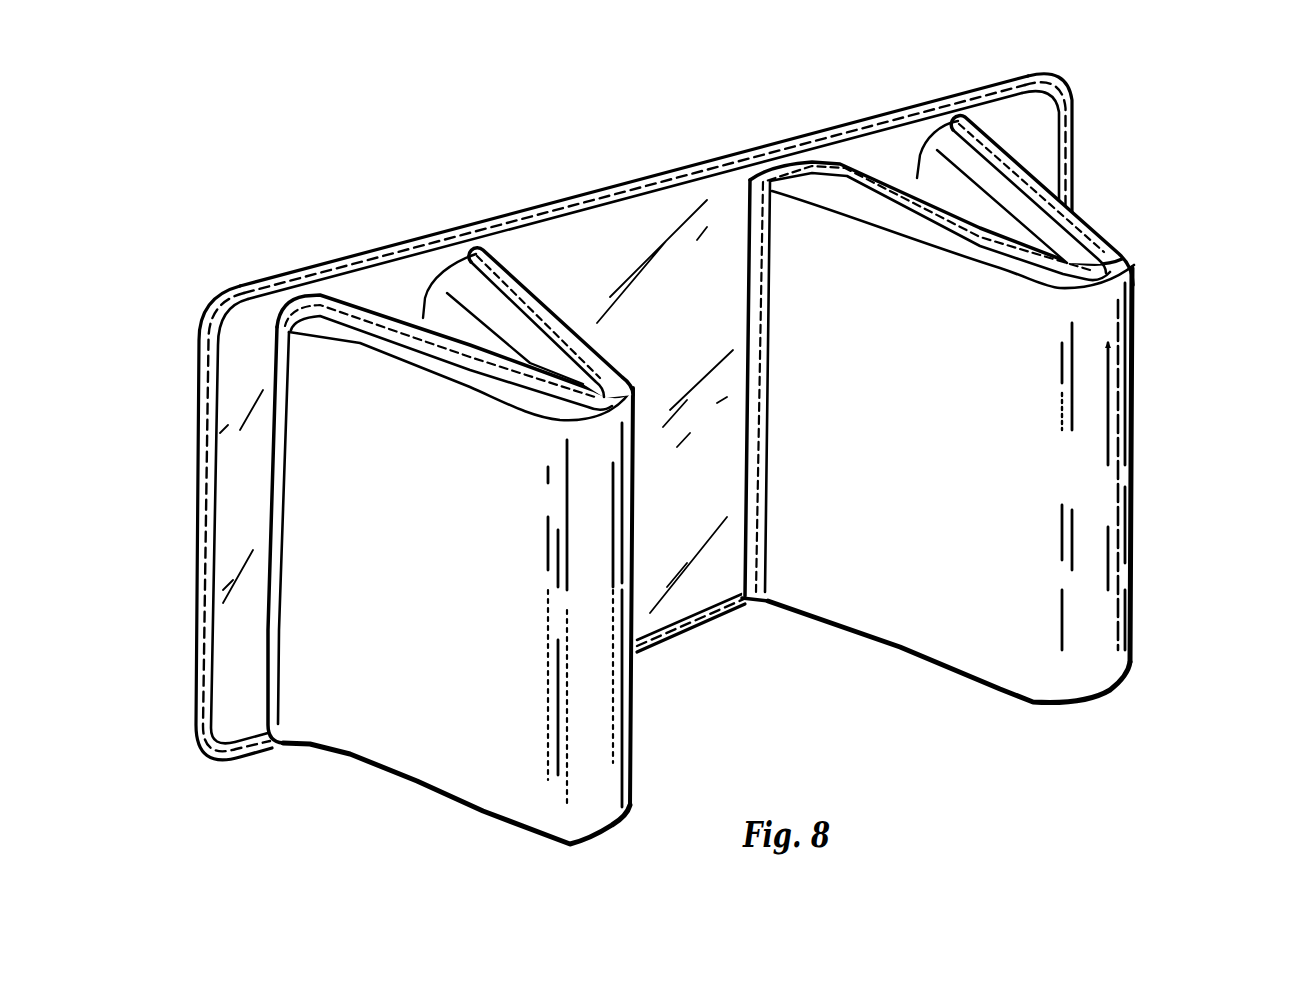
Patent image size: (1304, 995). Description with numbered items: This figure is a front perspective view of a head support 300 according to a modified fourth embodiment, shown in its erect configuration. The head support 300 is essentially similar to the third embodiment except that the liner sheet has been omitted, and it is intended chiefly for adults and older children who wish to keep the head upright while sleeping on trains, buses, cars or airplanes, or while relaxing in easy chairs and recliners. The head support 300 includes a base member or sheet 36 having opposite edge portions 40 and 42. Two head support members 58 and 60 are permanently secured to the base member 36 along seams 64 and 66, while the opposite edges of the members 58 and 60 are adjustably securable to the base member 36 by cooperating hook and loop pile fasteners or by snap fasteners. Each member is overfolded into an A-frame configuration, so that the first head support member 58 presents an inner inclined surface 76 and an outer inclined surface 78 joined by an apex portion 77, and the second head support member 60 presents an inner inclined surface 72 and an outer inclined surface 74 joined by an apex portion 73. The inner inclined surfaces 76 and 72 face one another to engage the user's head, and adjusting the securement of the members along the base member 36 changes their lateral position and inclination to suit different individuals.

The head support 300 is at (691, 436).
The base member 36 is at (673, 217).
The edge portion 40 is at (207, 427).
The edge portion 42 is at (1063, 163).
The head support member 58 is at (402, 449).
The head support member 60 is at (1137, 333).
The seam 64 is at (508, 250).
The seam 66 is at (755, 200).
The inner inclined surface 72 is at (1006, 386).
The apex portion 73 is at (1133, 650).
The outer inclined surface 74 is at (1135, 417).
The inner inclined surface 76 is at (563, 310).
The apex portion 77 is at (613, 747).
The outer inclined surface 78 is at (507, 693).